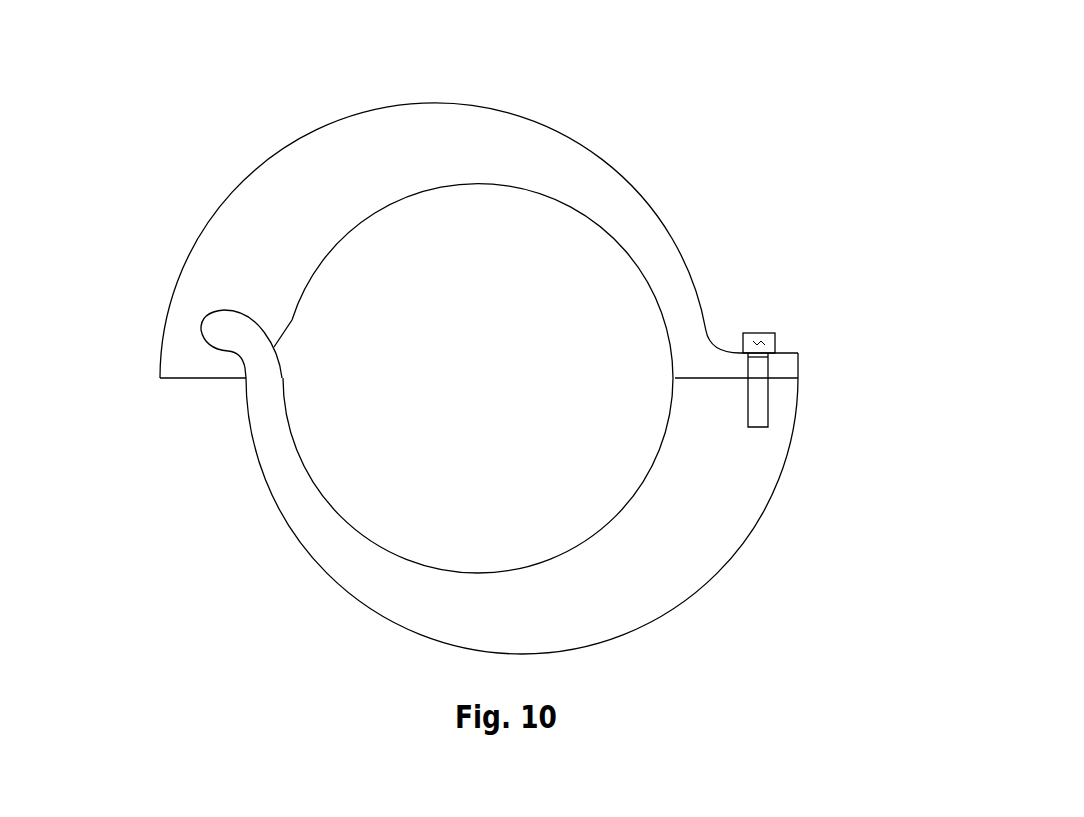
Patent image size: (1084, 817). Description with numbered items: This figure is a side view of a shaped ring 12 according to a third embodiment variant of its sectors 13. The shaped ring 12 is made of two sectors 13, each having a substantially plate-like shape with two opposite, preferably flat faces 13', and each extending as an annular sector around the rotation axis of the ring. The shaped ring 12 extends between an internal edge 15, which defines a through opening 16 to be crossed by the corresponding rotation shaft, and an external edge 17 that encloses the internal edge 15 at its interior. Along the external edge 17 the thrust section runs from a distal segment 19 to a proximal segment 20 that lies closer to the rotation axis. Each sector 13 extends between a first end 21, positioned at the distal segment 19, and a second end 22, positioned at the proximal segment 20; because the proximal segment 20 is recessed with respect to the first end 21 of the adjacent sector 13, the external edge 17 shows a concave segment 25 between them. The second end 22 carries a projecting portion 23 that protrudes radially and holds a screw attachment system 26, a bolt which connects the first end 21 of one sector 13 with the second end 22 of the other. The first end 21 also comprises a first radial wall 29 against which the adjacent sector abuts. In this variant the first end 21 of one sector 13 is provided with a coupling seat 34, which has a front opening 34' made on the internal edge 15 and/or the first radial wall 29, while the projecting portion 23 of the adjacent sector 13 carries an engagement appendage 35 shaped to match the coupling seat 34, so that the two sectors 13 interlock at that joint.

The shaped ring 12 is at (503, 354).
The sector 13 is at (503, 327).
The face 13' is at (503, 342).
The internal edge 15 is at (553, 558).
The through opening 16 is at (482, 390).
The external edge 17 is at (568, 125).
The distal segment 19 is at (503, 285).
The proximal segment 20 is at (504, 355).
The first end 21 is at (822, 408).
The second end 22 is at (805, 352).
The projecting portion 23 is at (797, 365).
The concave segment 25 is at (727, 312).
The screw attachment system 26 is at (787, 318).
The first radial wall 29 is at (198, 382).
The coupling seat 34 is at (147, 323).
The front opening 34' is at (331, 360).
The engagement appendage 35 is at (233, 239).